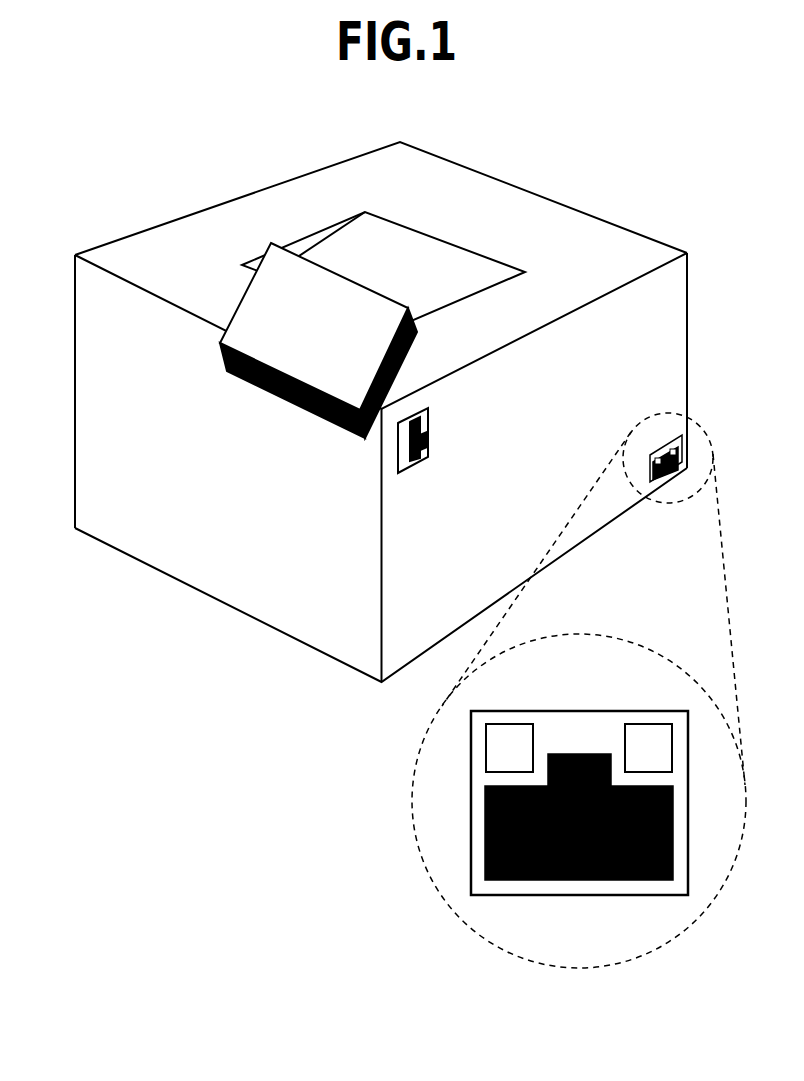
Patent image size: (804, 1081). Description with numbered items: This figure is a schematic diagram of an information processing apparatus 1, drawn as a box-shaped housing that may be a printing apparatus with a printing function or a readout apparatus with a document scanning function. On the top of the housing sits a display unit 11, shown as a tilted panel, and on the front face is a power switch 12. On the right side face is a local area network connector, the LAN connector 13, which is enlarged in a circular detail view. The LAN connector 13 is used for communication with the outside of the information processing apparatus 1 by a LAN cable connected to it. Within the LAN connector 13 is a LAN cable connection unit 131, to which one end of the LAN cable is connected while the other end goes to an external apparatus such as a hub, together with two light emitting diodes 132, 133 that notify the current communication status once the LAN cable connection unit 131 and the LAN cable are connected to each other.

The information processing apparatus 1 is at (518, 205).
The display unit 11 is at (280, 397).
The power switch 12 is at (413, 465).
The LAN connector 13 is at (547, 895).
The LAN cable connection unit 131 is at (617, 880).
The light emitting diode 132 is at (515, 722).
The light emitting diode 133 is at (645, 722).